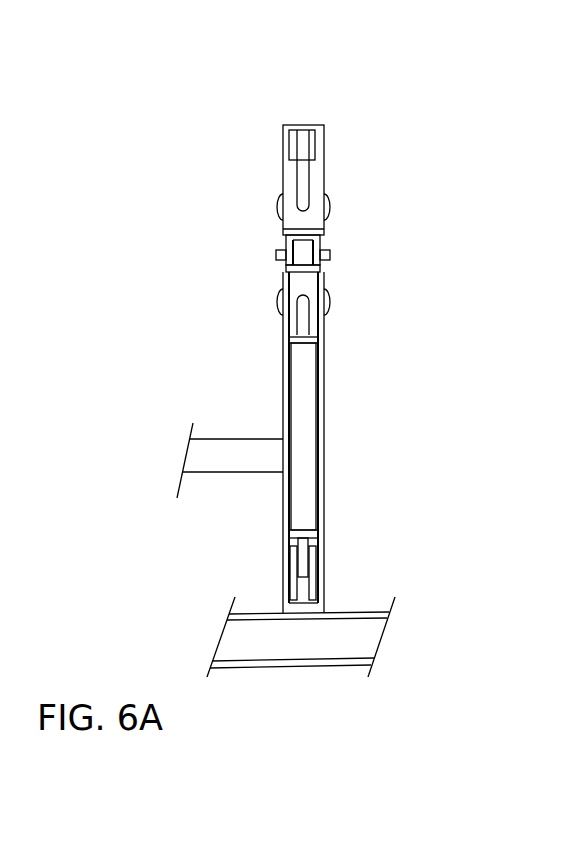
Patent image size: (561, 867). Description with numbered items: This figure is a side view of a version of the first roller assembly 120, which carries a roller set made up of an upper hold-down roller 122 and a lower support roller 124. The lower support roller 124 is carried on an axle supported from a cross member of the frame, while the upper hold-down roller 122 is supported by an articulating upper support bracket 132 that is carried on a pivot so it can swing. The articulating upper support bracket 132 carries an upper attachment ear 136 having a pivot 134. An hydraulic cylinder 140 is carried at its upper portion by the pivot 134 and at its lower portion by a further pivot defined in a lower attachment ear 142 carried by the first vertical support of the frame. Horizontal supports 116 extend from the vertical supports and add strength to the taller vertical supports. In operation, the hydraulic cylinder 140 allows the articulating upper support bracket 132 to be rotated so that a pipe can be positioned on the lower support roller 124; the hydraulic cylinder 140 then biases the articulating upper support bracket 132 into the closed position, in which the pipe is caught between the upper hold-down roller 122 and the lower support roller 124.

The horizontal support 116 is at (208, 487).
The first roller assembly 120 is at (285, 337).
The upper hold-down roller 122 is at (327, 207).
The lower support roller 124 is at (328, 302).
The articulating upper support bracket 132 is at (298, 148).
The pivot 134 is at (270, 255).
The upper attachment ear 136 is at (312, 142).
The hydraulic cylinder 140 is at (308, 420).
The lower attachment ear 142 is at (315, 573).